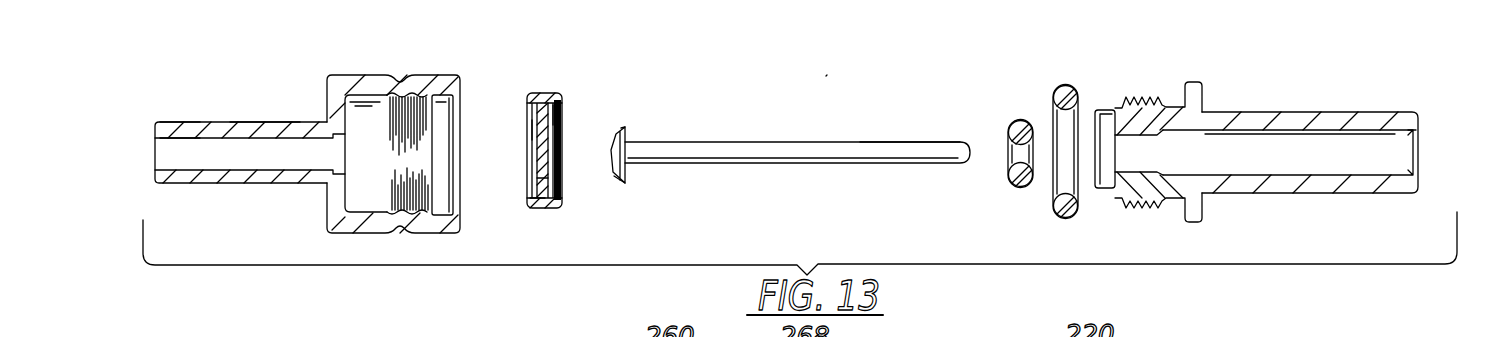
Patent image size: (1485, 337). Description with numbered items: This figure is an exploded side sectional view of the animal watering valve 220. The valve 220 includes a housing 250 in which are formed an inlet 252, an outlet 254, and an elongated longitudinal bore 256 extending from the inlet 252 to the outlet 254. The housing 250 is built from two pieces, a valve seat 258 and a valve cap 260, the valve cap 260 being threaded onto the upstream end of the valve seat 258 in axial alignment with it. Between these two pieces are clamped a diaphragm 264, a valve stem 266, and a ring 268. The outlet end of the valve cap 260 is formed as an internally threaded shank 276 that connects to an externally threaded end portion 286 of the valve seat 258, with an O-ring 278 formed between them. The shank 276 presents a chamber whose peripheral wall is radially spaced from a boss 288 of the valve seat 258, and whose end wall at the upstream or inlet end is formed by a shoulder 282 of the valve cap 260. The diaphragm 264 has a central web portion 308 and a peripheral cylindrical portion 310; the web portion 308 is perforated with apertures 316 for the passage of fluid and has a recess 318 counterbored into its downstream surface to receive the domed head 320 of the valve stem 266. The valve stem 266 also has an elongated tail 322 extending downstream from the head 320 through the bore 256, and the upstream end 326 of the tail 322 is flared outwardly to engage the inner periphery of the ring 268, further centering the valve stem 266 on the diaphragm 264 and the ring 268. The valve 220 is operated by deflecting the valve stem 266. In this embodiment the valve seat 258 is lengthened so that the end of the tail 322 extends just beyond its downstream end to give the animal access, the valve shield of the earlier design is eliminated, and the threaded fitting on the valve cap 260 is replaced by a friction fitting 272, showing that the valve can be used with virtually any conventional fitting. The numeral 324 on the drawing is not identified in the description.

The valve 220 is at (858, 31).
The housing 250 is at (276, 191).
The inlet 252 is at (172, 137).
The outlet 254 is at (1413, 133).
The elongated longitudinal bore 256 is at (1278, 172).
The valve seat 258 is at (1413, 50).
The valve cap 260 is at (443, 68).
The diaphragm 264 is at (546, 84).
The valve stem 266 is at (872, 105).
The ring 268 is at (1017, 118).
The friction fitting 272 is at (246, 122).
The internally threaded shank 276 is at (398, 208).
The O-ring 278 is at (1064, 85).
The shoulder 282 is at (356, 109).
The externally threaded end portion 286 is at (1141, 97).
The boss 288 is at (1098, 191).
The central web portion 308 is at (534, 130).
The peripheral cylindrical portion 310 is at (535, 208).
The apertures 316 is at (557, 110).
The recess 318 is at (545, 178).
The domed head 320 is at (627, 179).
The elongated tail 322 is at (890, 142).
The pin head 324 is at (612, 141).
The upstream end 326 is at (627, 140).